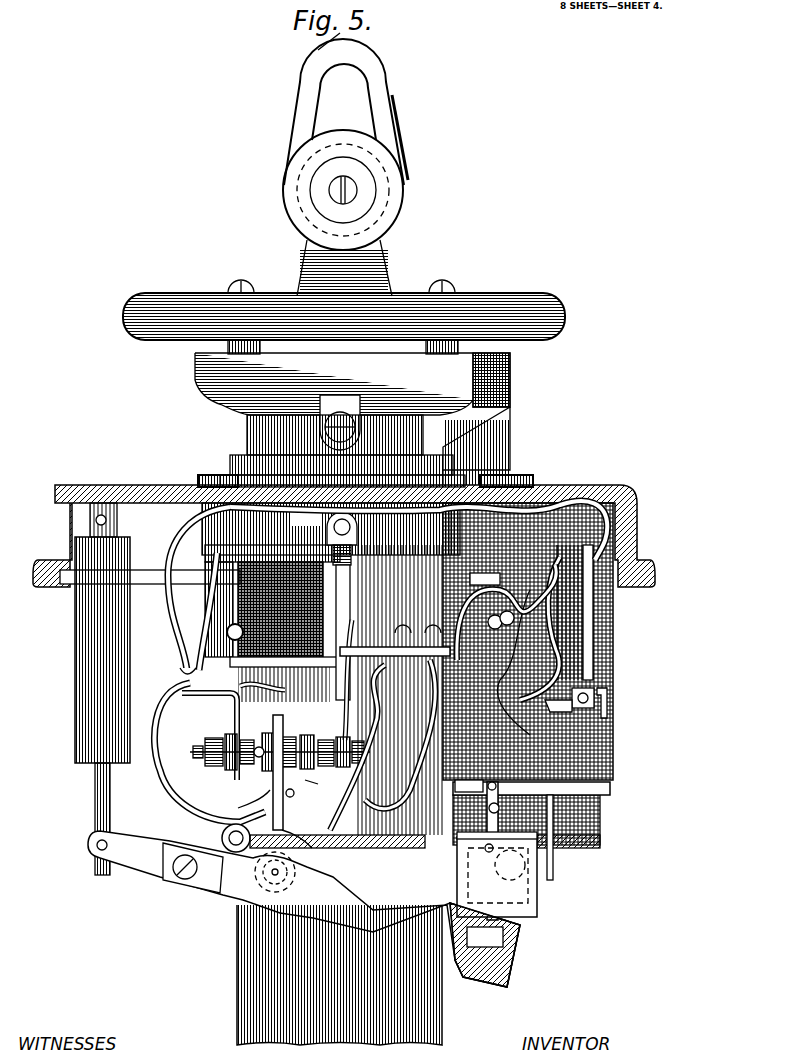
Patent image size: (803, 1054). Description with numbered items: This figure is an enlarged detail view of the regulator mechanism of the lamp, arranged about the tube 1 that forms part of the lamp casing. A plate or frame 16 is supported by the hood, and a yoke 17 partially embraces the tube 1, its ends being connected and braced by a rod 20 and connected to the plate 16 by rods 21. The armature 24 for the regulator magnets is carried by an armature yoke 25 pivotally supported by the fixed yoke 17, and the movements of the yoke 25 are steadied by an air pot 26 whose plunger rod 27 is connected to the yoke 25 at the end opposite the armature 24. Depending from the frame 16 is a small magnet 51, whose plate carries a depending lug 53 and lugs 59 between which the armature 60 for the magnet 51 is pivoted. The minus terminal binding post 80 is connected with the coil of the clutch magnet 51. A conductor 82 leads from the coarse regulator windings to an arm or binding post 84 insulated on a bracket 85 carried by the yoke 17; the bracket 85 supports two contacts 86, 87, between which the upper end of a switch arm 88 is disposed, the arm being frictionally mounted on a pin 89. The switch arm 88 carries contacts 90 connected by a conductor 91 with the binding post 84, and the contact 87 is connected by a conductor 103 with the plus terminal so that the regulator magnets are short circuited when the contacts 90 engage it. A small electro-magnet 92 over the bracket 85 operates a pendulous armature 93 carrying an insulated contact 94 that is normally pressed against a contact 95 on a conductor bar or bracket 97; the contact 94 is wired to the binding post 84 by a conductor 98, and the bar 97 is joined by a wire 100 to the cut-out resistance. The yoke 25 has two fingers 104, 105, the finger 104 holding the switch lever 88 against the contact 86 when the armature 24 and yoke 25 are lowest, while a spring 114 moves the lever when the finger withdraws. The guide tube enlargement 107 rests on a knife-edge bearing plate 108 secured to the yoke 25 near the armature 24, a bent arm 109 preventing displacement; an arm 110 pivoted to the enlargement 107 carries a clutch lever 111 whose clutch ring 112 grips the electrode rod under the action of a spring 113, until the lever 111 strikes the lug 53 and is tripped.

The tube 1 is at (440, 1005).
The plate or frame 16 is at (470, 500).
The yoke 17 is at (337, 854).
The rod 20 is at (213, 831).
The rods 21 is at (597, 812).
The armature 24 is at (497, 945).
The armature yoke 25 is at (293, 910).
The air pot 26 is at (75, 671).
The rod 27 is at (94, 803).
The small magnet 51 is at (614, 615).
The depending lug 53 is at (600, 690).
The lugs 59 is at (607, 708).
The armature 60 is at (575, 722).
The minus terminal binding post 80 is at (320, 538).
The conductor 82 is at (166, 603).
The arm or binding post 84 is at (195, 700).
The bracket 85 is at (238, 808).
The contact 86 is at (319, 789).
The contact 87 is at (275, 730).
The switch arm 88 is at (255, 775).
The pin 89 is at (280, 875).
The contacts 90 is at (269, 684).
The conductor 91 is at (162, 765).
The electro-magnet 92 is at (242, 600).
The pendulous armature 93 is at (350, 598).
The contact 94 is at (395, 644).
The contact 95 is at (358, 678).
The conductor bar or bracket 97 is at (357, 747).
The conductor 98 is at (227, 629).
The wire 100 is at (508, 646).
The conductor 103 is at (382, 744).
The finger 104 is at (244, 837).
The finger 105 is at (306, 846).
The enlargement 107 is at (510, 893).
The knife-edge bearing plate 108 is at (520, 935).
The bent arm 109 is at (520, 920).
The arm 110 is at (530, 835).
The clutch lever 111 is at (600, 787).
The clutch ring 112 is at (469, 786).
The spring 113 is at (520, 792).
The spring 114 is at (300, 798).